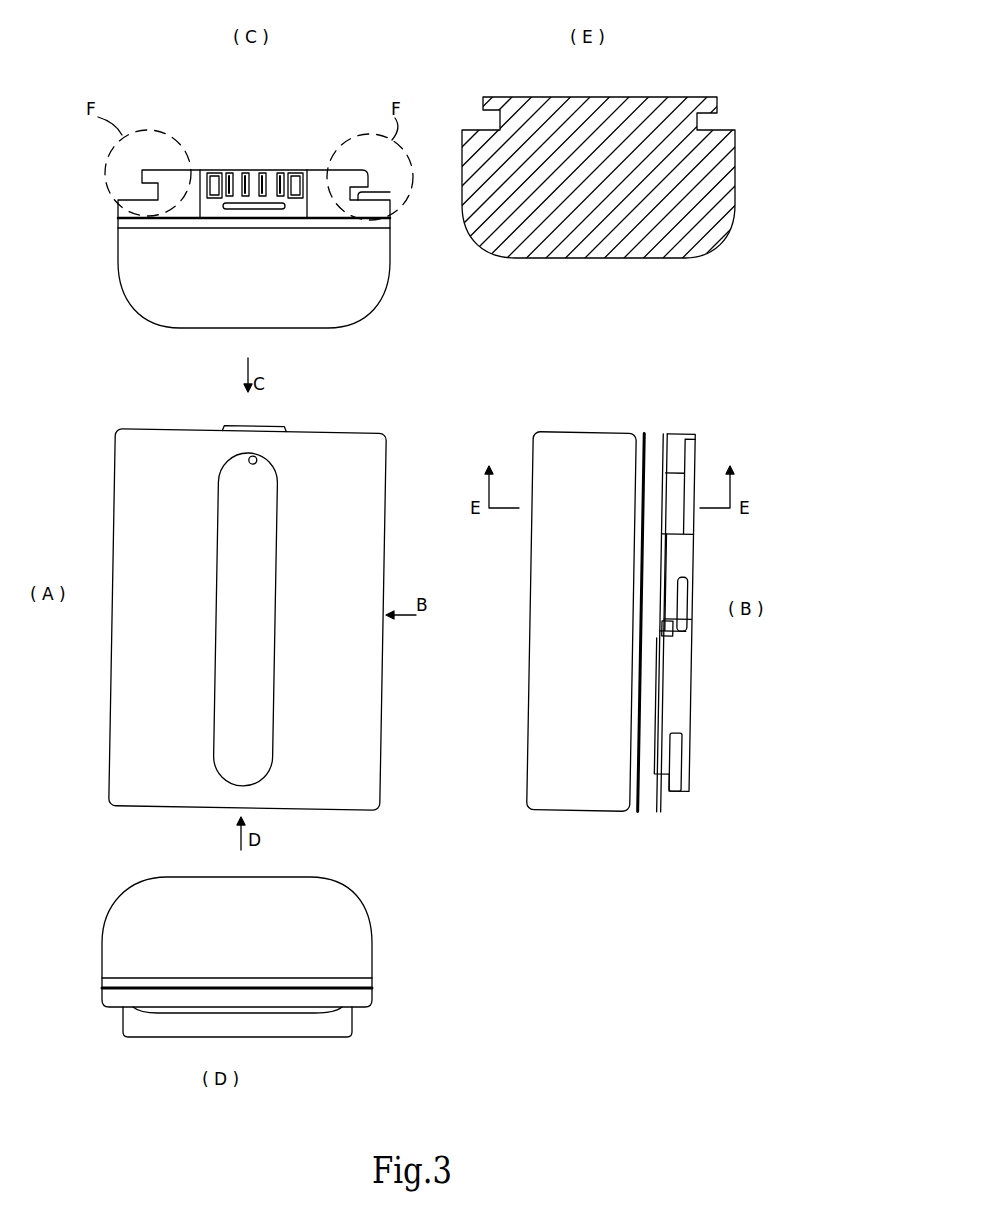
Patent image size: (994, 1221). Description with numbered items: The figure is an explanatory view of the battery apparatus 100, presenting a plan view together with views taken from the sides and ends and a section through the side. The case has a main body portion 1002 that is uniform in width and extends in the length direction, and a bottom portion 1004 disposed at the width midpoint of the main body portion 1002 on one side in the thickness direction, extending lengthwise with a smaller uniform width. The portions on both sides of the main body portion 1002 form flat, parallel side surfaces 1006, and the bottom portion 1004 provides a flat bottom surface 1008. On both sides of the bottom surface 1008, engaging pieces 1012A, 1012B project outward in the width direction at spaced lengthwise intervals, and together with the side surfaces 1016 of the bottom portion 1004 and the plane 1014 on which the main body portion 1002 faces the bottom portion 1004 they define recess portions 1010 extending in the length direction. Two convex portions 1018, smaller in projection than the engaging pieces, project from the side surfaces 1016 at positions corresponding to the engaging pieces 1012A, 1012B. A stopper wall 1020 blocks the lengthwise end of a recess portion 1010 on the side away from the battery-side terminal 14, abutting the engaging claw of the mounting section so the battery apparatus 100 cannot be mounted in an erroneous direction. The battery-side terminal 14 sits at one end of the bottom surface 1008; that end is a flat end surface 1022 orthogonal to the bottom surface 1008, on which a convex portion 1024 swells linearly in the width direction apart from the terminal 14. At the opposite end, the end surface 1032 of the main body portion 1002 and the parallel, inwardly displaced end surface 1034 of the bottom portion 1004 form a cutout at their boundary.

The battery-side terminal 14 is at (230, 162).
The battery apparatus 100 is at (399, 485).
The main body portion 1002 is at (356, 437).
The bottom portion 1004 is at (672, 431).
The side surfaces 1006 is at (118, 250).
The bottom surface 1008 is at (313, 170).
The recess portions 1010 is at (493, 120).
The engaging piece 1012A is at (376, 171).
The engaging piece 1012B is at (688, 618).
The plane 1014 is at (386, 203).
The side surfaces of the bottom portion 1016 is at (356, 232).
The convex portions 1018 is at (382, 194).
The stopper wall 1020 is at (665, 793).
The end surface 1022 is at (183, 297).
The convex portion 1024 is at (273, 212).
The end surface 1032 is at (177, 810).
The end surface 1034 is at (672, 793).